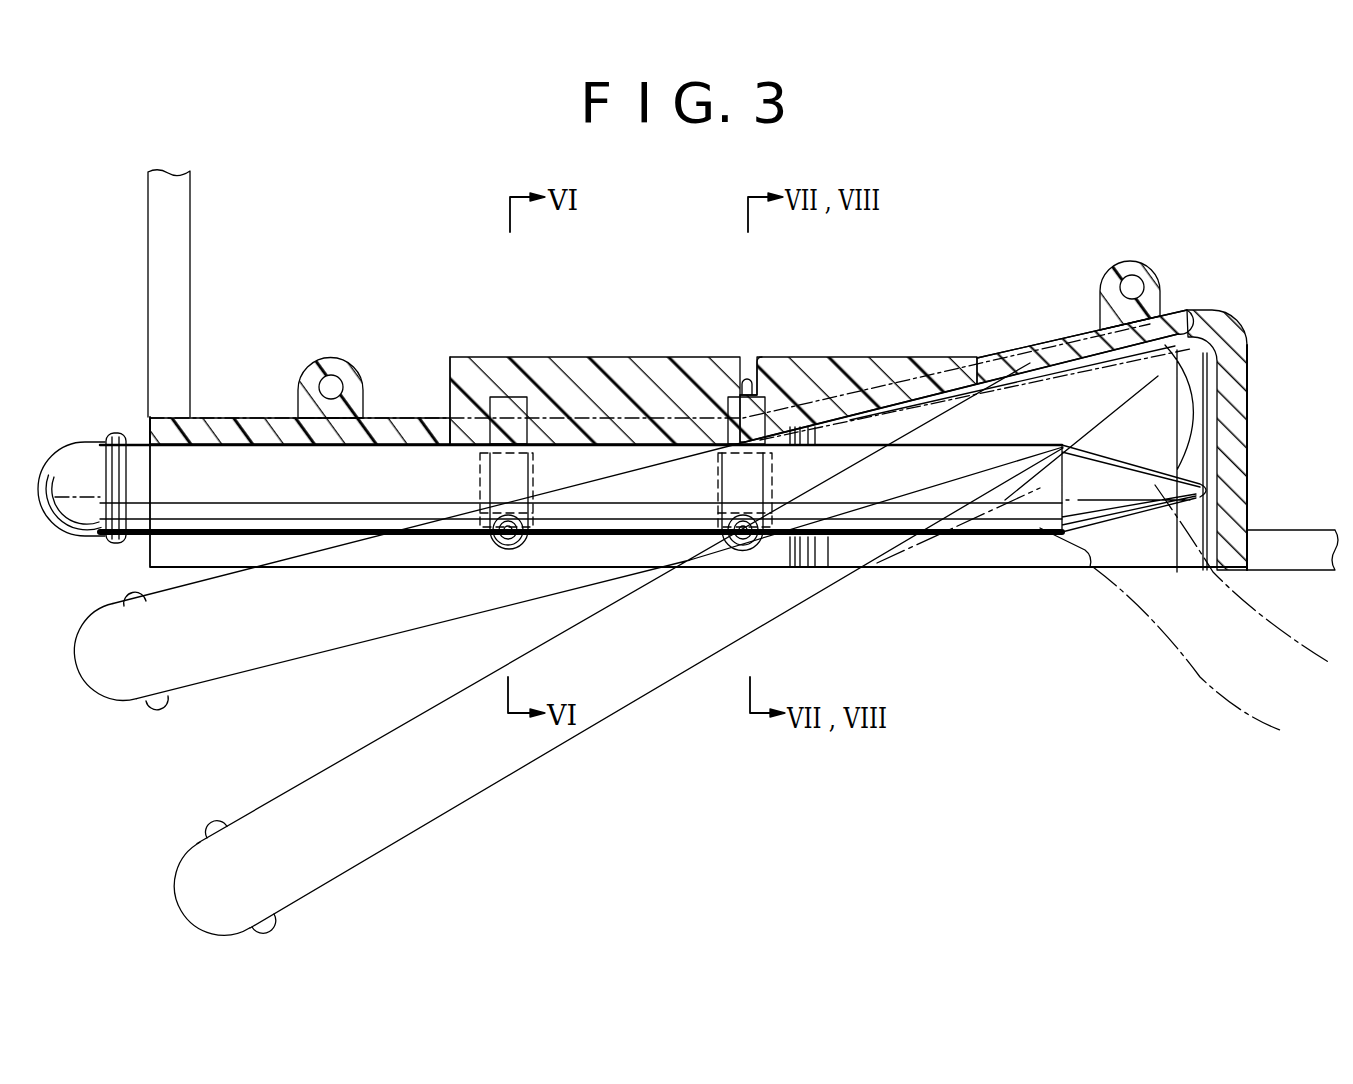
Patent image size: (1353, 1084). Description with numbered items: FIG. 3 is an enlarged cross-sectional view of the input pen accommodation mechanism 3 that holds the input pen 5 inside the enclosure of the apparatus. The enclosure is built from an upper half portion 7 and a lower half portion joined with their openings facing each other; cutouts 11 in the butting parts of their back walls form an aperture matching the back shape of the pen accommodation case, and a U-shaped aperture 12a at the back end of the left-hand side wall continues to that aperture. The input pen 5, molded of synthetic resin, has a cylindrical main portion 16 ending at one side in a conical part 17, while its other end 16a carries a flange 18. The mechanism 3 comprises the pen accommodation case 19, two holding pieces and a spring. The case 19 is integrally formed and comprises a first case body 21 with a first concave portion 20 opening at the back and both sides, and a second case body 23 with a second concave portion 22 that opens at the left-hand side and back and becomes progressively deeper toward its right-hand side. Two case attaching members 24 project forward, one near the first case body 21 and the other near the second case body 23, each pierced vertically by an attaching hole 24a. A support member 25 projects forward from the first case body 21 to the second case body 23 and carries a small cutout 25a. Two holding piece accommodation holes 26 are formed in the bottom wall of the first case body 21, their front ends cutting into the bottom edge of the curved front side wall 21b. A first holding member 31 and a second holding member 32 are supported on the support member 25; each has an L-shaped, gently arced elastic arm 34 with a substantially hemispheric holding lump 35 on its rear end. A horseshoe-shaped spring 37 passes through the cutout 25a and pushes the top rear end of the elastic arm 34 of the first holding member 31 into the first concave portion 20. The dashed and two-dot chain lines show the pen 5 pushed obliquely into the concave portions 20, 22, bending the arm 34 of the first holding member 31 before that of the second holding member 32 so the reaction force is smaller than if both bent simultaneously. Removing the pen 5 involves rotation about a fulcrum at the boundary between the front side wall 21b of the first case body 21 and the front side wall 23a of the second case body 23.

The input pen accommodation mechanism 3 is at (941, 601).
The input pen 5 is at (328, 537).
The upper half portion 7 is at (148, 305).
The cutouts 11 is at (1248, 548).
The U-shaped aperture 12a is at (150, 430).
The cylindrical main portion 16 is at (272, 540).
The other end of the main portion 16a is at (85, 450).
The conical part 17 is at (1150, 381).
The flange 18 is at (112, 546).
The pen accommodation case 19 is at (1226, 318).
The first concave portion 20 is at (378, 442).
The first case body 21 is at (448, 363).
The curved front side wall 21b is at (423, 425).
The second concave portion 22 is at (970, 398).
The second case body 23 is at (1040, 340).
The front side wall of the second case body 23a is at (1000, 358).
The case attaching members 24 is at (300, 377).
The attaching holes 24a is at (331, 383).
The support member 25 is at (618, 363).
The small cutout 25a is at (765, 362).
The holding piece accommodation holes 26 is at (535, 470).
The first holding member 31 is at (770, 470).
The second holding member 32 is at (485, 478).
The elastic arm 34 is at (480, 488).
The holding lump 35 is at (490, 545).
The horseshoe-shaped spring 37 is at (745, 392).